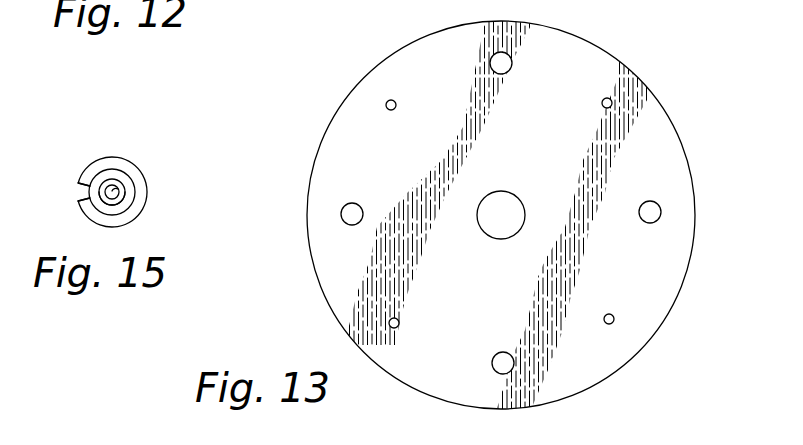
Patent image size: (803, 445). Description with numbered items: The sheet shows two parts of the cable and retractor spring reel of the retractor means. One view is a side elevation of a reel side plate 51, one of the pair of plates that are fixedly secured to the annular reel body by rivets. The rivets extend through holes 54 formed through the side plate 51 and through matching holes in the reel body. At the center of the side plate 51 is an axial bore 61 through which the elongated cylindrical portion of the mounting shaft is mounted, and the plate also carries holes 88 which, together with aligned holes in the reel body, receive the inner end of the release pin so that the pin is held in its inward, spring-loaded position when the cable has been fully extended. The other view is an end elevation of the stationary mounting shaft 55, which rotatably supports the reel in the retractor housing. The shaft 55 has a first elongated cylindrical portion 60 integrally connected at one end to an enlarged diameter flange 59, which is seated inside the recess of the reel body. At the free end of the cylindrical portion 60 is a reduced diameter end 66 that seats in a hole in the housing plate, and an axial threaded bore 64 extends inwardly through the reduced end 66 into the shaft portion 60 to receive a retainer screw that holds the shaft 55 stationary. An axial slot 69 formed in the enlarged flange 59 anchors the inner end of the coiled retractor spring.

In FIG. 13, the reel side plate 51 is at (640, 332).
In FIG. 13, the holes 54 is at (397, 106).
In FIG. 13, the axial bore 61 is at (505, 192).
In FIG. 13, the holes 88 is at (490, 62).
In FIG. 15, the stationary mounting shaft 55 is at (108, 146).
In FIG. 15, the enlarged diameter flange 59 is at (118, 177).
In FIG. 15, the first elongated cylindrical portion 60 is at (95, 174).
In FIG. 15, the axial threaded bore 64 is at (121, 188).
In FIG. 15, the reduced diameter end 66 is at (126, 200).
In FIG. 15, the axial slot 69 is at (82, 190).